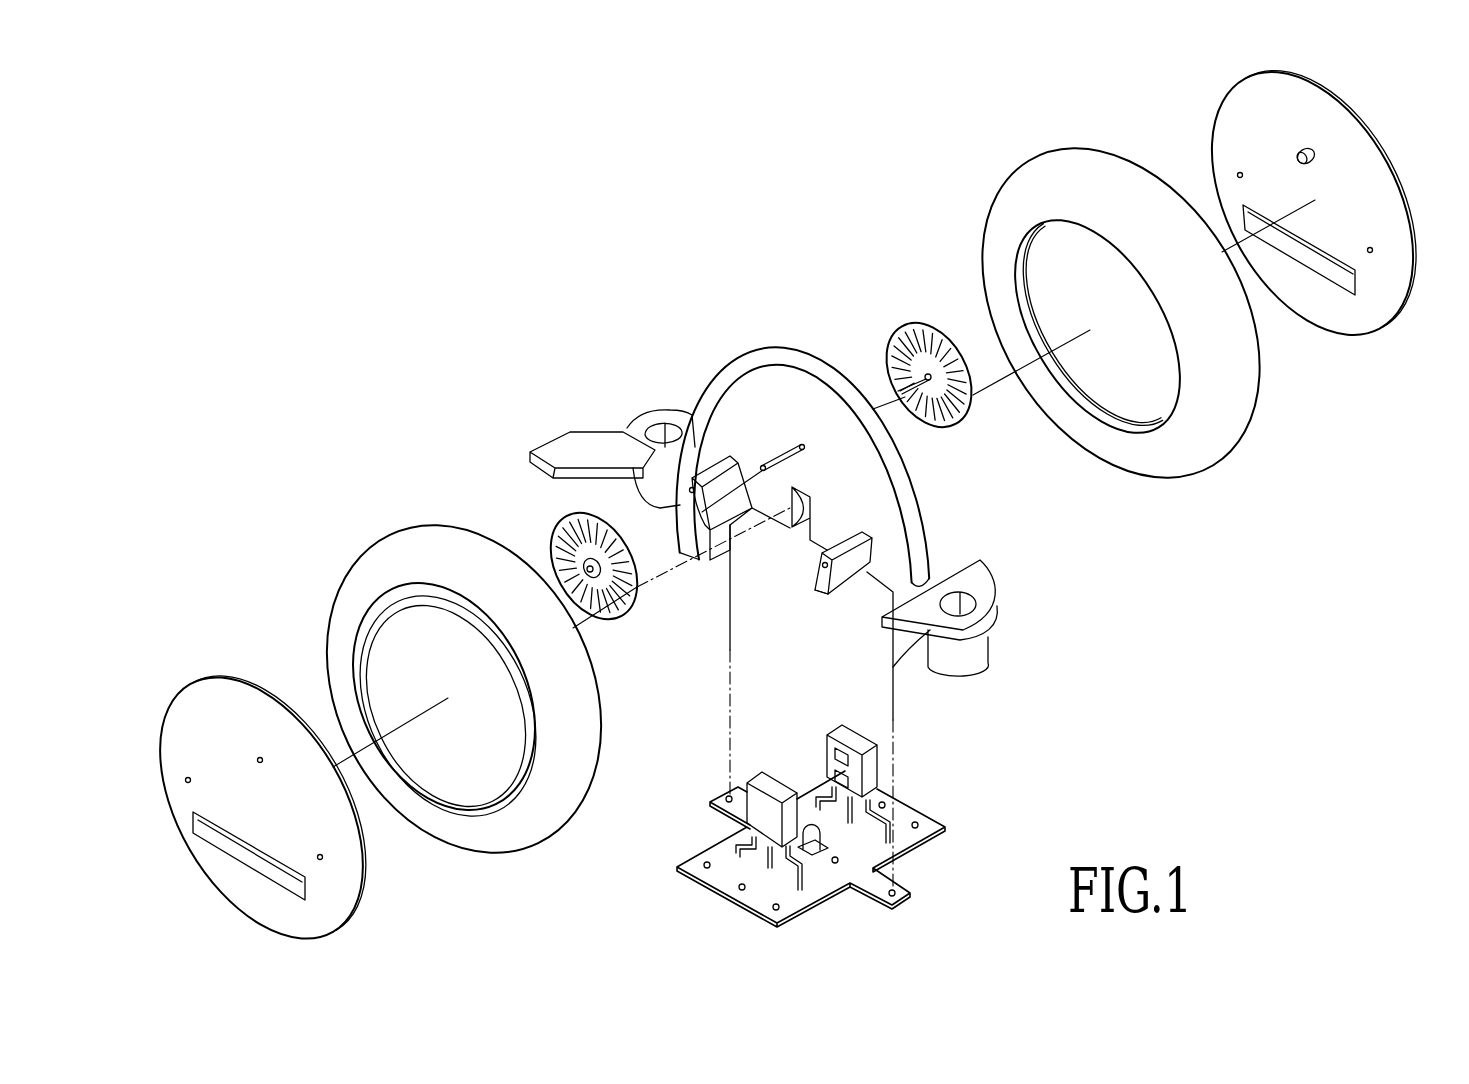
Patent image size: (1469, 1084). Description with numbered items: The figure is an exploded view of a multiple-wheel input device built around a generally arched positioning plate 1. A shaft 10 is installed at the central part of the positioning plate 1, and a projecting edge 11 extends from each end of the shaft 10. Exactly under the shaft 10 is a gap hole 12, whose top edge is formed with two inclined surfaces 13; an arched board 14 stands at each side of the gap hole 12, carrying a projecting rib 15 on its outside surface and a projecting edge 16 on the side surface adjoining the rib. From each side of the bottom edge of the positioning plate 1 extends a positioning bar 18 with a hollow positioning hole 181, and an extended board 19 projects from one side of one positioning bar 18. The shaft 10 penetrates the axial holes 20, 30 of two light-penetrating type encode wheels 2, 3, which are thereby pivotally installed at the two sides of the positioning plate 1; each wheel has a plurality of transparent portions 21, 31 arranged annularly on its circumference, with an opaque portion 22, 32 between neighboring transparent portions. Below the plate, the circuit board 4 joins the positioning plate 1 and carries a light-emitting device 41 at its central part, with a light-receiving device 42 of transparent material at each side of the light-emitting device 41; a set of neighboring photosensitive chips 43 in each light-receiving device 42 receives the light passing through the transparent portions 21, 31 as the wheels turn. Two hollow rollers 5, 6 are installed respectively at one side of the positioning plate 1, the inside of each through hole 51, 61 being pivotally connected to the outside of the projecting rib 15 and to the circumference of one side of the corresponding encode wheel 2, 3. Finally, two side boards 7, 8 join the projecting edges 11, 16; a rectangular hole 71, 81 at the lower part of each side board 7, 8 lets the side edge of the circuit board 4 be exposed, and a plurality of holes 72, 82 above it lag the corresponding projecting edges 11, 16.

The positioning plate 1 is at (784, 346).
The shaft 10 is at (762, 466).
The projecting edge 11 is at (703, 477).
The gap hole 12 is at (800, 533).
The inclined surfaces 13 is at (790, 528).
The arched board 14 is at (828, 580).
The projecting rib 15 is at (812, 592).
The projecting edge 16 is at (817, 571).
The positioning bar 18 is at (972, 606).
The hollow positioning hole 181 is at (968, 601).
The extended board 19 is at (573, 446).
The light-penetrating type encode wheel 2 is at (913, 369).
The axial hole 20 is at (937, 418).
The transparent portions 21 is at (920, 328).
The opaque portion 22 is at (930, 372).
The light-penetrating type encode wheel 3 is at (569, 555).
The axial hole 30 is at (603, 616).
The transparent portions 31 is at (555, 543).
The opaque portion 32 is at (553, 557).
The circuit board 4 is at (810, 832).
The light-emitting device 41 is at (817, 851).
The light-receiving device 42 is at (757, 817).
The photosensitive chip 43 is at (877, 746).
The hollow roller 5 is at (1120, 313).
The through hole 51 is at (1107, 353).
The hollow roller 6 is at (464, 688).
The through hole 61 is at (463, 750).
The side board 7 is at (1311, 203).
The rectangular hole 71 is at (1307, 253).
The holes 72 is at (1372, 250).
The side board 8 is at (259, 807).
The rectangular hole 81 is at (247, 855).
The holes 82 is at (187, 783).